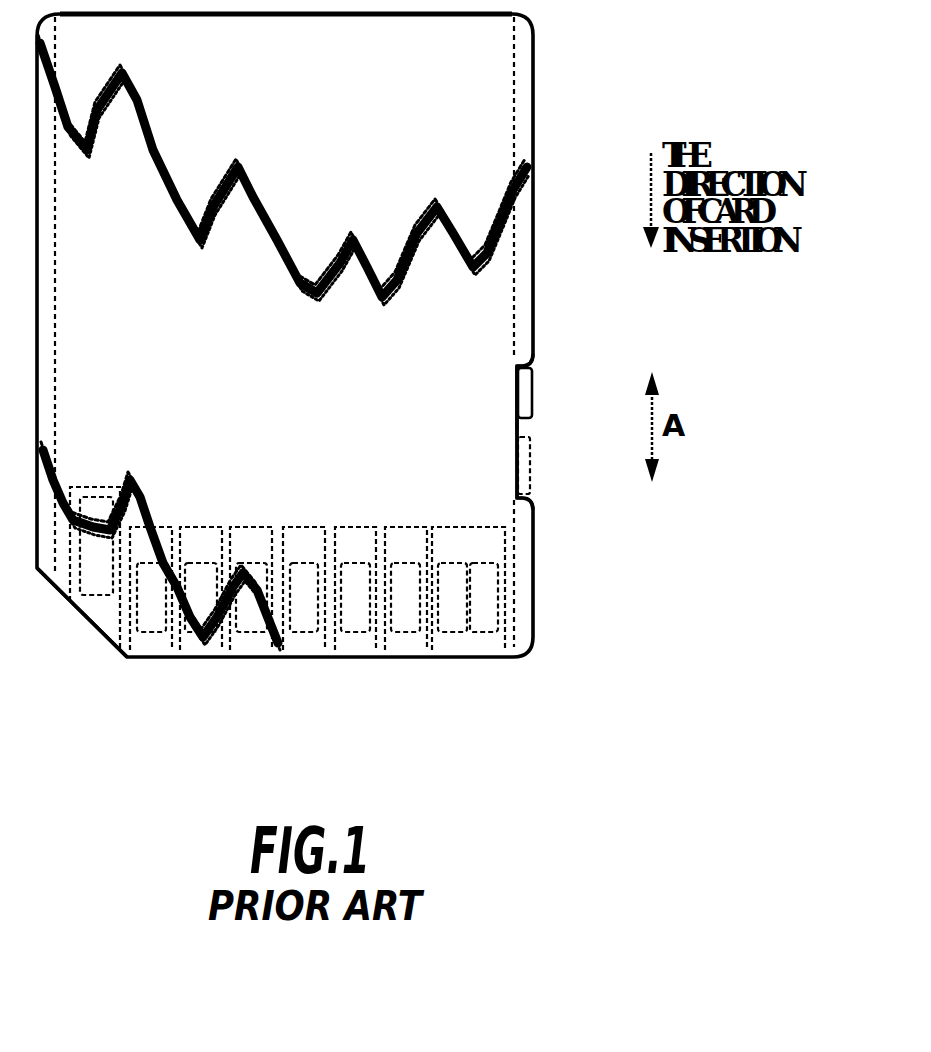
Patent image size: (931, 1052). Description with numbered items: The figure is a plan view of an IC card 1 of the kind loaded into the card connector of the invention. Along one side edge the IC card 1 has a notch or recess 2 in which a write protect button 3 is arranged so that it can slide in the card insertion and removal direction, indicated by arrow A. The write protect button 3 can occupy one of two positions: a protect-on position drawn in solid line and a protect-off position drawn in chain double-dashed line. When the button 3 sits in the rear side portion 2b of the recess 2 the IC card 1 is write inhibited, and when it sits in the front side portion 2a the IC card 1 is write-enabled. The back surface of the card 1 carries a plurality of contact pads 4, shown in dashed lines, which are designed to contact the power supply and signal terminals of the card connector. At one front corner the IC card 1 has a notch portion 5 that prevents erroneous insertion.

The IC card 1 is at (494, 163).
The notch (recess) 2 is at (515, 430).
The front side portion 2a is at (516, 468).
The rear side portion 2b is at (516, 395).
The write protect button 3 is at (535, 390).
The contact pads 4 is at (150, 565).
The notch portion 5 is at (64, 600).